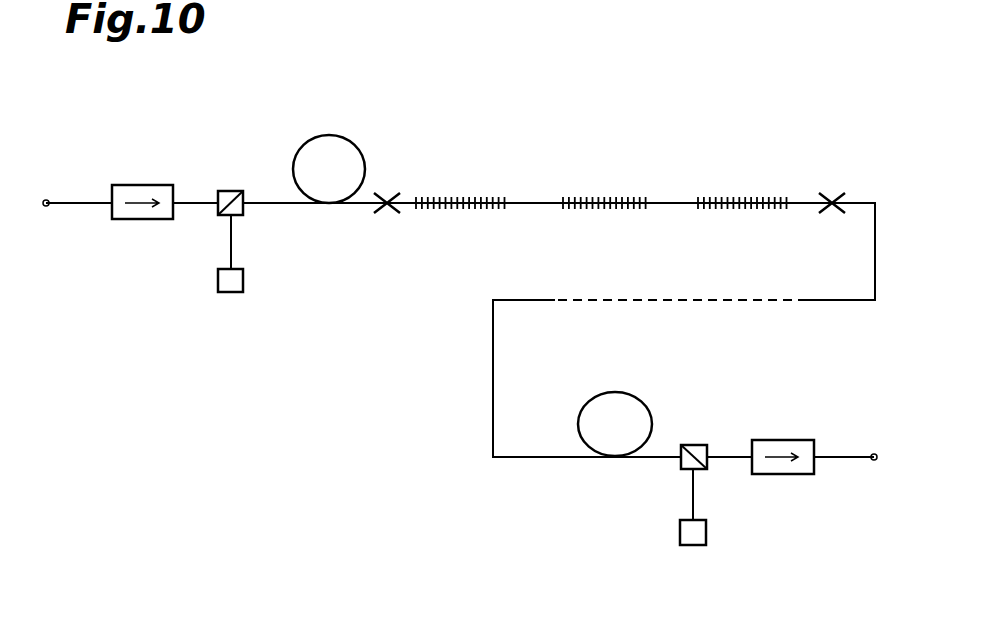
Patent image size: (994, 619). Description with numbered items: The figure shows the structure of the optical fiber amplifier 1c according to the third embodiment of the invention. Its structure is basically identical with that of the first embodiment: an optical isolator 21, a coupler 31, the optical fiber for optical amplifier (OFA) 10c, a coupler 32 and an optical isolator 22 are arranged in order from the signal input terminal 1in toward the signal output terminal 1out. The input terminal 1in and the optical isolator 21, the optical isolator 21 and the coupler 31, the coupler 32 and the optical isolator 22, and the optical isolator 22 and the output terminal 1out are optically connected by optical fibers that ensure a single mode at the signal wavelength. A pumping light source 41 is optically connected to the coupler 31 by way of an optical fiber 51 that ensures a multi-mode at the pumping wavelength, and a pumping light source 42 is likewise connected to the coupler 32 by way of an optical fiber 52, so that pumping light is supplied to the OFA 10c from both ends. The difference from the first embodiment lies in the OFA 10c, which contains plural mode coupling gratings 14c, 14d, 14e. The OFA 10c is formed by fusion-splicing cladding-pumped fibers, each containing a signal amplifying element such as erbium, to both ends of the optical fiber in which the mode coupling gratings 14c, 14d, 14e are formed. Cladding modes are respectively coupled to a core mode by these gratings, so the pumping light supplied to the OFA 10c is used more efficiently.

The optical fiber amplifier 1c is at (722, 93).
The signal input terminal 1in is at (46, 206).
The signal output terminal 1out is at (874, 460).
The OFA 10c is at (327, 135).
The mode coupling grating 14c is at (470, 197).
The mode coupling grating 14d is at (611, 197).
The mode coupling grating 14e is at (753, 197).
The optical isolator 21 is at (140, 185).
The optical isolator 22 is at (782, 440).
The coupler 31 is at (232, 191).
The coupler 32 is at (693, 445).
The pumping light source 41 is at (230, 292).
The pumping light source 42 is at (692, 545).
The optical fiber 51 is at (231, 244).
The optical fiber 52 is at (693, 500).